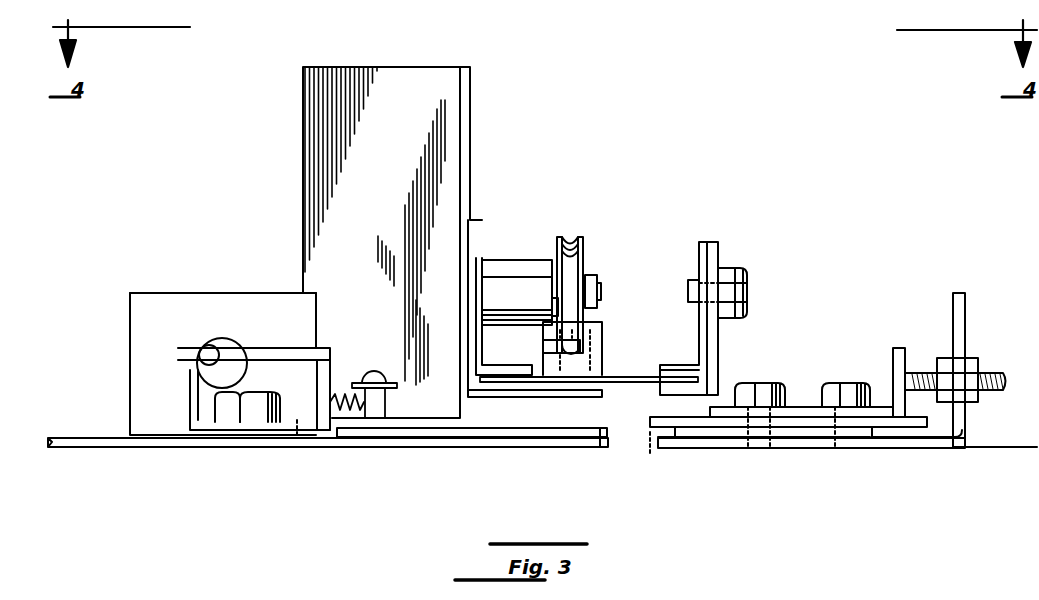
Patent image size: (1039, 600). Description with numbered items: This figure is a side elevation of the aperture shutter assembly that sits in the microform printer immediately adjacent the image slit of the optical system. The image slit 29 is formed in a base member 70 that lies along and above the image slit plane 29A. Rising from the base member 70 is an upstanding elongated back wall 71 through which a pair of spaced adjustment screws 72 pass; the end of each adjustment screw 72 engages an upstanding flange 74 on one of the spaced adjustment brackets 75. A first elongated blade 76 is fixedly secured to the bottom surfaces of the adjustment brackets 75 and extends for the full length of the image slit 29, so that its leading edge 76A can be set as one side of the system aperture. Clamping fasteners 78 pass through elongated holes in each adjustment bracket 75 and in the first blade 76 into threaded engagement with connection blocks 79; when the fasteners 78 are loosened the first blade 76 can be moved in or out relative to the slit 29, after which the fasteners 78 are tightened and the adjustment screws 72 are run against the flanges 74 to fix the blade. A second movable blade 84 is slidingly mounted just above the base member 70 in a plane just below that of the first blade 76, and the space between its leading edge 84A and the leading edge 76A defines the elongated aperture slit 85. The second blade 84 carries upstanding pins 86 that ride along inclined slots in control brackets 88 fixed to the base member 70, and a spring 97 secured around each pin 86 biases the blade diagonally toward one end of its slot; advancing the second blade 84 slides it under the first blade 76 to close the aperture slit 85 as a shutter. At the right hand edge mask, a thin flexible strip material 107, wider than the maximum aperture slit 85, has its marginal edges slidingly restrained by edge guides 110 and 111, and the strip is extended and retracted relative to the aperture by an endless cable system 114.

The image slit 29 is at (658, 447).
The image slit plane 29A is at (1025, 447).
The base member 70 is at (270, 447).
The back wall 71 is at (963, 323).
The adjustment screw 72 is at (993, 392).
The upstanding flange 74 is at (893, 370).
The adjustment bracket 75 is at (803, 410).
The first elongated blade 76 is at (893, 432).
The leading edge of first blade 76A is at (655, 404).
The clamping fastener 78 is at (752, 385).
The connection block 79 is at (785, 432).
The second movable blade 84 is at (567, 432).
The leading edge of second blade 84A is at (607, 447).
The aperture slit 85 is at (605, 460).
The upstanding pin 86 is at (387, 402).
The control bracket 88 is at (482, 438).
The spring 97 is at (340, 406).
The flexible strip material 107 is at (621, 375).
The edge guide 110 is at (678, 368).
The edge guide 111 is at (550, 380).
The endless cable system 114 is at (548, 248).